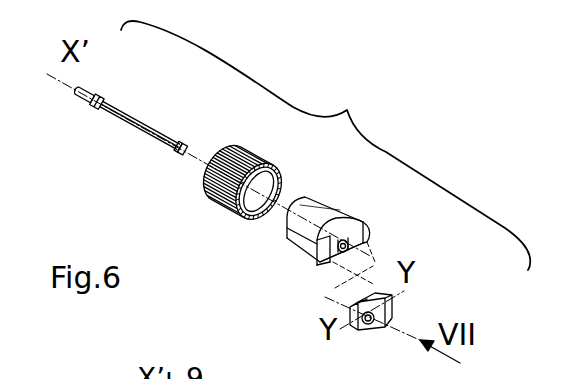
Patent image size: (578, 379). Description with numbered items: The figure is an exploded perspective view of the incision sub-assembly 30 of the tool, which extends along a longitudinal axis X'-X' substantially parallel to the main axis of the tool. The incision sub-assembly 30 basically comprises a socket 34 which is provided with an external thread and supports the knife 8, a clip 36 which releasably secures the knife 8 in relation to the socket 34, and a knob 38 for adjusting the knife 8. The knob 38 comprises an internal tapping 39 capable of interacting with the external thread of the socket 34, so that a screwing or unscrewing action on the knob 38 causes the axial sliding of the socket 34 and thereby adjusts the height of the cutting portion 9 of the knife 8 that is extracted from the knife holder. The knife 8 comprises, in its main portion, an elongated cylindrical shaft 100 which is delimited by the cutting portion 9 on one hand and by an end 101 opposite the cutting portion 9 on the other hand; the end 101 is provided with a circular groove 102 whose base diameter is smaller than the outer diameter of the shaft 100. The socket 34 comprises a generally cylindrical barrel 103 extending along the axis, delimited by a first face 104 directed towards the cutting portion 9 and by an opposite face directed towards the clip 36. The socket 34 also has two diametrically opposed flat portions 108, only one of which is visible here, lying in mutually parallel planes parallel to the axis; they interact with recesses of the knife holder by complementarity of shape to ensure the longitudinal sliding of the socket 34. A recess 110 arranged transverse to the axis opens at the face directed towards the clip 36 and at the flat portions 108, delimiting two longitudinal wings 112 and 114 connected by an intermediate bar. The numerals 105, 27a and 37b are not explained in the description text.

The knife 8 is at (131, 96).
The cutting portion 9 is at (80, 106).
The shaft 100 is at (133, 128).
The end 101 is at (178, 145).
The circular groove 102 is at (173, 151).
The incision sub-assembly 30 is at (325, 145).
The knob 38 is at (239, 142).
The internal tapping 39 is at (260, 186).
The socket 34 is at (323, 238).
The barrel 103 is at (326, 214).
The first face 104 is at (286, 230).
The bolt 105 is at (352, 233).
The flat portions 108 is at (308, 241).
The recess 110 is at (374, 242).
The longitudinal wing 112 is at (322, 259).
The longitudinal wing 114 is at (335, 266).
The clip 36 is at (397, 307).
The cut-off numeral of adjacent figure 27a is at (72, 370).
The cut-off numeral of adjacent figure 37b is at (264, 374).